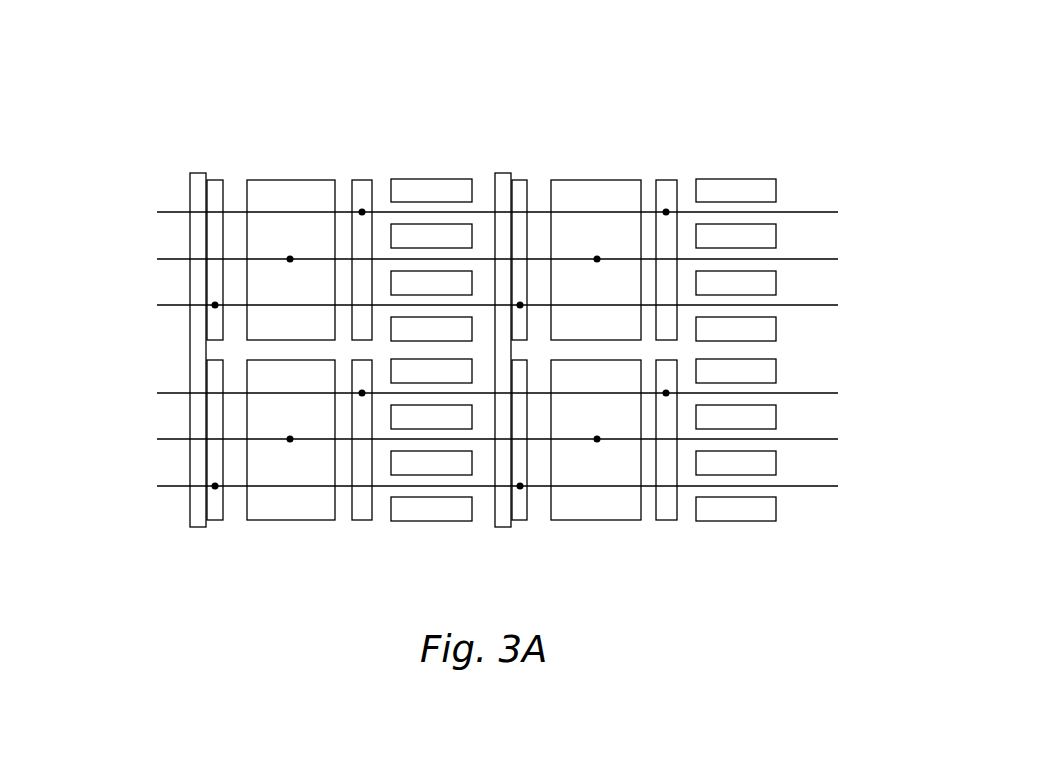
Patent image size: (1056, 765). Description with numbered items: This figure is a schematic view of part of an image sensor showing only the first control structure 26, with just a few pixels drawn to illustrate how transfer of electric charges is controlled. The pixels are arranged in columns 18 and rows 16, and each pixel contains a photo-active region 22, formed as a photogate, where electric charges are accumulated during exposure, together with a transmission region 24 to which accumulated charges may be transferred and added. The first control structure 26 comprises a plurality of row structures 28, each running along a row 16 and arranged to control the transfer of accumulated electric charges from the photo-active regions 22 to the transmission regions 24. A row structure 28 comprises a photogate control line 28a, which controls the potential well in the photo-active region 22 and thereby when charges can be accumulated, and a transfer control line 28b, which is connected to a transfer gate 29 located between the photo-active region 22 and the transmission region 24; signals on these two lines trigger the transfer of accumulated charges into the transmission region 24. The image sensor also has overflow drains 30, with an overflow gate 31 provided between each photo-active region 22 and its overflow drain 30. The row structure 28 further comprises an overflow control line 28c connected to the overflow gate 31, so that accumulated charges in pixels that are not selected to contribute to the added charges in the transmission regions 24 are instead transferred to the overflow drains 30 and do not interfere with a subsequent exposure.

The row 16 is at (135, 243).
The column 18 is at (352, 113).
The photo-active region 22 is at (287, 190).
The transmission region 24 is at (463, 183).
The first control structure 26 is at (953, 245).
The row structure 28 is at (822, 165).
The photogate control line 28a is at (837, 259).
The transfer control line 28b is at (838, 212).
The overflow control line 28c is at (837, 305).
The transfer gate 29 is at (358, 180).
The overflow drain 30 is at (197, 173).
The overflow gate 31 is at (213, 180).